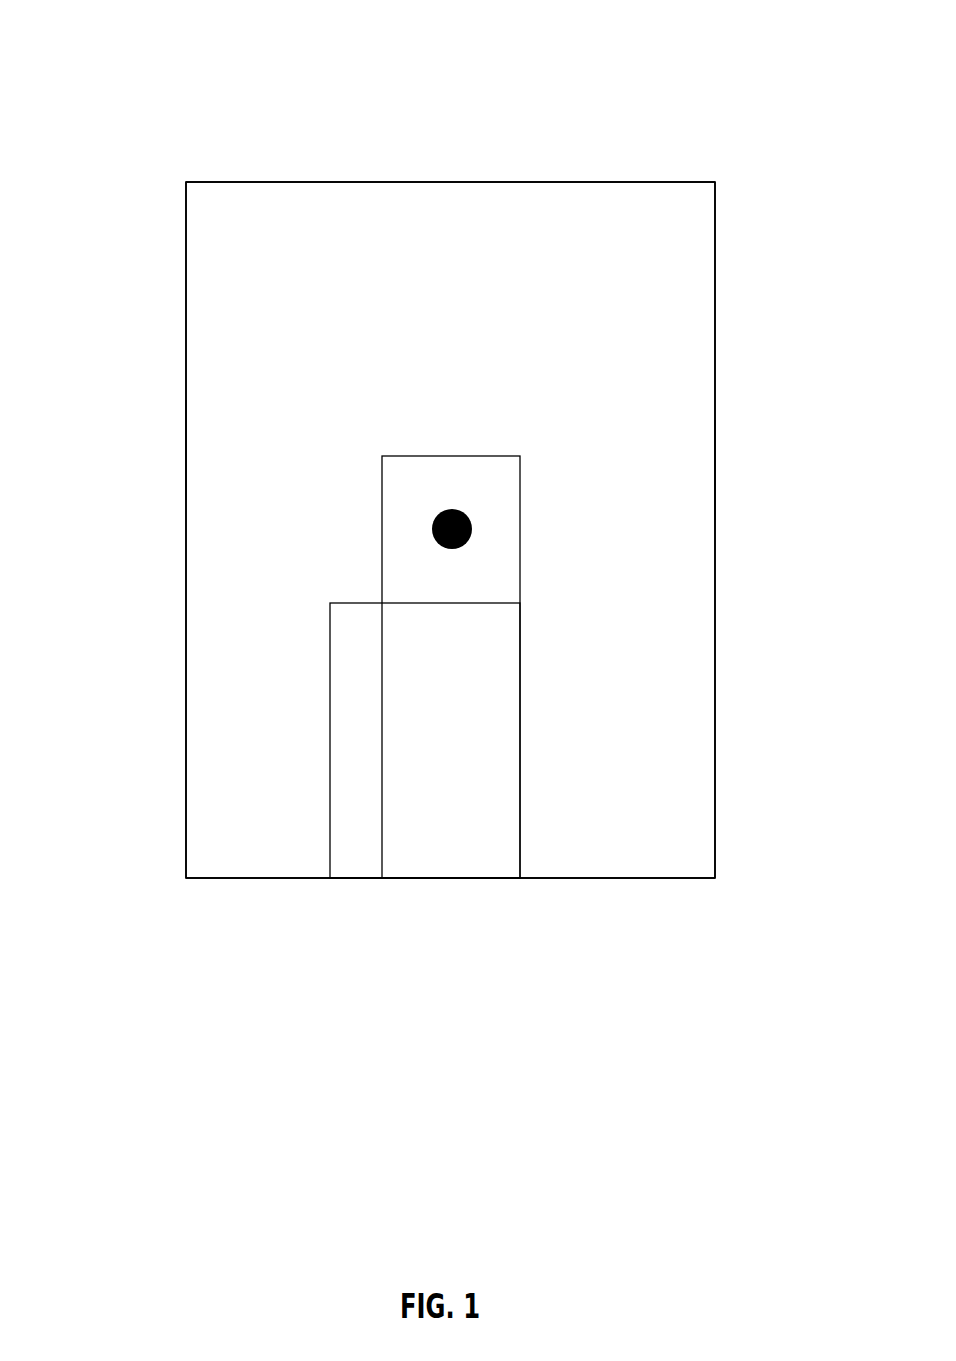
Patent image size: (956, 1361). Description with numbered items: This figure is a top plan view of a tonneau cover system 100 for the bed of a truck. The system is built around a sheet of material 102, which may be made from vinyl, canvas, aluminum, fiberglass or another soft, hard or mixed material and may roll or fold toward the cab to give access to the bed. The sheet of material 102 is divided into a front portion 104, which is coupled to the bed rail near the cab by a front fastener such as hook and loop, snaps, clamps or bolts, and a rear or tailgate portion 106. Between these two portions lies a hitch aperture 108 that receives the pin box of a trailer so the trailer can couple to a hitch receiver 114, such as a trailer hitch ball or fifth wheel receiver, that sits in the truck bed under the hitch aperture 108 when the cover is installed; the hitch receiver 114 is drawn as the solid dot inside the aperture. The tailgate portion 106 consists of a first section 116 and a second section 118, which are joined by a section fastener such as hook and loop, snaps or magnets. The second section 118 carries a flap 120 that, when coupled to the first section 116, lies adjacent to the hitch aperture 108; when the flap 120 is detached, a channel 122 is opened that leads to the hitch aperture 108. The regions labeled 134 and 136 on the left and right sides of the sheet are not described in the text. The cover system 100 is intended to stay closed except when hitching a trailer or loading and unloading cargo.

The tonneau cover system 100 is at (200, 36).
The sheet of material 102 is at (692, 316).
The front portion 104 is at (445, 203).
The tailgate portion 106 is at (617, 850).
The hitch aperture 108 is at (395, 469).
The hitch receiver 114 is at (472, 527).
The first section 116 is at (240, 748).
The second section 118 is at (672, 781).
The flap 120 is at (450, 850).
The channel 122 is at (493, 896).
The left portion 134 is at (205, 449).
The right portion 136 is at (702, 468).